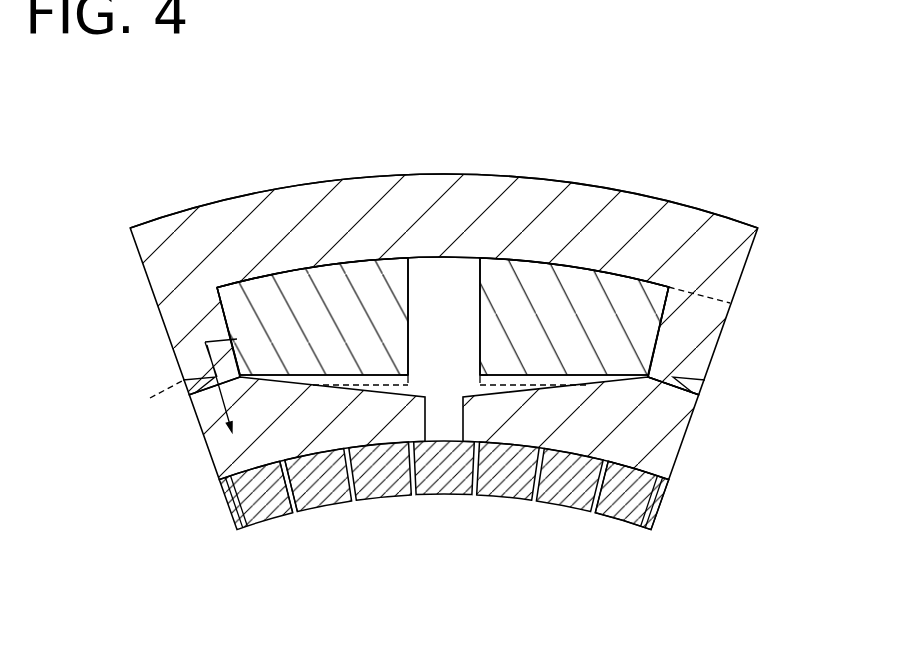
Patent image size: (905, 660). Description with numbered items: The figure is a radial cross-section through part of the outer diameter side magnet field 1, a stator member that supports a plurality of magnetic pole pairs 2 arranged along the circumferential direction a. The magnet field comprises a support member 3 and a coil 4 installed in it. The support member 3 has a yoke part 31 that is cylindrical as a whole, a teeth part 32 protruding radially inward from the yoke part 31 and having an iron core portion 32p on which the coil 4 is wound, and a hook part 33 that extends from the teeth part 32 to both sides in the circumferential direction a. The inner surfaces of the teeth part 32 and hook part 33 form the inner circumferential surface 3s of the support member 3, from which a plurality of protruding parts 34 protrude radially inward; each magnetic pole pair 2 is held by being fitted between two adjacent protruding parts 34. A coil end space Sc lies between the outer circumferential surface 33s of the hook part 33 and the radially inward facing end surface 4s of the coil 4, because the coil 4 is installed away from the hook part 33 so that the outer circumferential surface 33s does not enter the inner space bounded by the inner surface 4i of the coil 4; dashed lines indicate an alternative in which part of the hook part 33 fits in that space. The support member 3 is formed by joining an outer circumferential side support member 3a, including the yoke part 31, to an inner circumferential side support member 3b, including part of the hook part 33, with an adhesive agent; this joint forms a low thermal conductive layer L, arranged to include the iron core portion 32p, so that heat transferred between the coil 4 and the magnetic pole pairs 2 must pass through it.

The outer diameter side magnet field 1 is at (726, 160).
The magnetic pole pair 2 is at (623, 500).
The support member 3 is at (837, 232).
The outer circumferential side support member 3a is at (133, 229).
The inner circumferential side support member 3b is at (149, 397).
The inner circumferential surface 3s is at (244, 474).
The coil 4 is at (345, 290).
The inner surface 4i is at (210, 300).
The end surface 4s is at (424, 380).
The yoke part 31 is at (713, 248).
The teeth part 32 is at (693, 323).
The iron core portion 32p is at (736, 307).
The hook part 33 is at (643, 460).
The outer circumferential surface 33s is at (327, 384).
The protruding part 34 is at (658, 512).
The low thermal conductive layer L is at (197, 392).
The coil end space Sc is at (478, 383).
The circumferential direction a is at (590, 167).